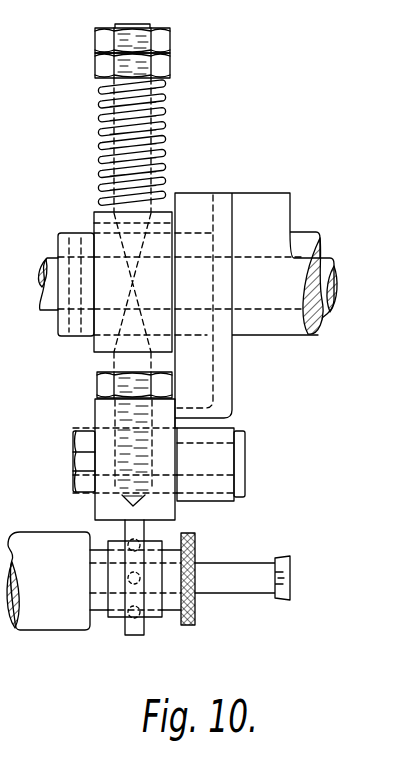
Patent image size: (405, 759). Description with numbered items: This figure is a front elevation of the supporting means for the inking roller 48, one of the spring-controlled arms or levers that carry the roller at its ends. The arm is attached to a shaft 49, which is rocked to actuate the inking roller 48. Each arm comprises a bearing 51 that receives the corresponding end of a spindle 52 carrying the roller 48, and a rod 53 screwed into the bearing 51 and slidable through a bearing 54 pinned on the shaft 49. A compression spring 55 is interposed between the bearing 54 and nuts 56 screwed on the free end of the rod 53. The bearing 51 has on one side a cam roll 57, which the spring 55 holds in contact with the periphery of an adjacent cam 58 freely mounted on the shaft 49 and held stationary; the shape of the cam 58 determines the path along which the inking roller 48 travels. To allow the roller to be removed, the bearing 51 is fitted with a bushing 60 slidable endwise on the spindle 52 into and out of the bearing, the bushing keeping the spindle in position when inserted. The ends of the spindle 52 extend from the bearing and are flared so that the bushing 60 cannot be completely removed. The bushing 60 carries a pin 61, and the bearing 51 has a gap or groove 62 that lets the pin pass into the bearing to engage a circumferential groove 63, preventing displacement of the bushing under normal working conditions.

The inking roller 48 is at (75, 540).
The shaft 49 is at (42, 258).
The bearing 51 is at (137, 630).
The spindle 52 is at (244, 568).
The rod 53 is at (107, 356).
The bearing 54 is at (105, 280).
The compression spring 55 is at (165, 118).
The nuts 56 is at (172, 52).
The cam roll 57 is at (230, 490).
The cam 58 is at (232, 361).
The bushing 60 is at (196, 553).
The pin 61 is at (130, 578).
The gap or groove 62 is at (160, 545).
The circumferential groove 63 is at (130, 615).